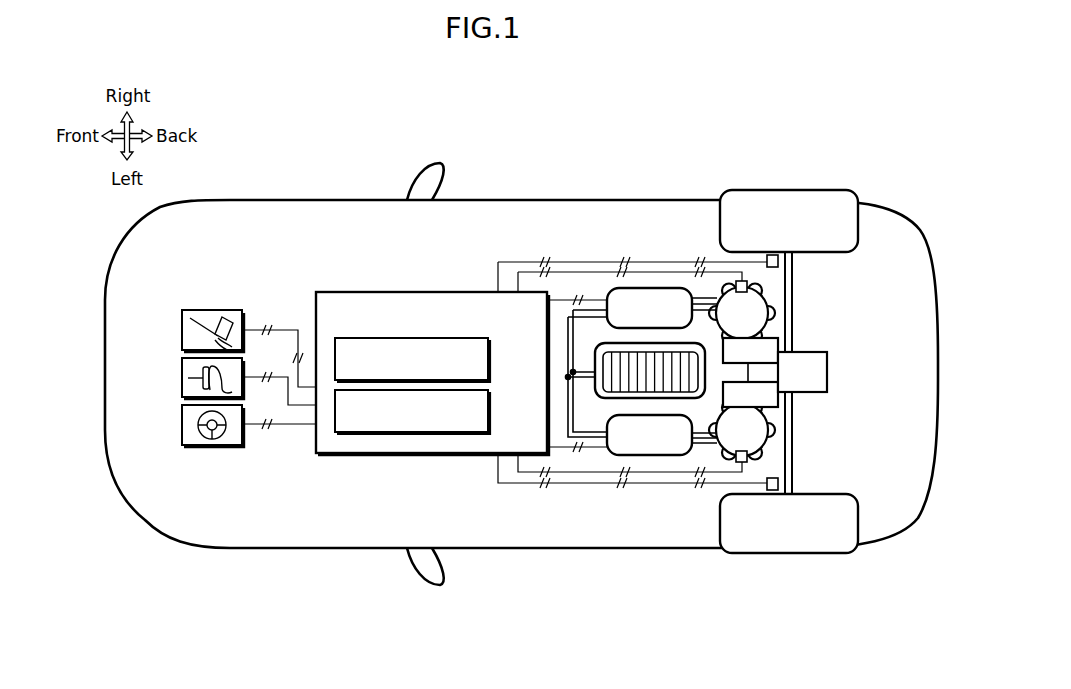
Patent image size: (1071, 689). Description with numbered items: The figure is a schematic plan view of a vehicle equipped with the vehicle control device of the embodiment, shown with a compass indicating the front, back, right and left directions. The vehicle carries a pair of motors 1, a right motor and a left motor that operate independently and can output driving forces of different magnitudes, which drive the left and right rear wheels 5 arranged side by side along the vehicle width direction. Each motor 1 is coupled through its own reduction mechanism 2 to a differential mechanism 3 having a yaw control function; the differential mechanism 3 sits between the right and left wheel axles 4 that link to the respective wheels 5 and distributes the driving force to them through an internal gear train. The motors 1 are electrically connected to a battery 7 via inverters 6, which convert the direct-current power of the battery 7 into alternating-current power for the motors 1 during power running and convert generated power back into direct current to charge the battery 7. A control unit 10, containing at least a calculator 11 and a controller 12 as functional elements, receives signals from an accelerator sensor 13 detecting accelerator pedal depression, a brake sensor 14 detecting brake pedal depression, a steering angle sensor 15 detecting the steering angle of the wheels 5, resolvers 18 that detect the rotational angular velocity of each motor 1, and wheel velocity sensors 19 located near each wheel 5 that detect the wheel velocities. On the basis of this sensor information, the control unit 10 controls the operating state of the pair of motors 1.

The motor 1 is at (770, 318).
The reduction mechanism 2 is at (778, 345).
The differential mechanism 3 is at (829, 372).
The wheel axle 4 is at (794, 266).
The wheel 5 is at (858, 222).
The inverter 6 is at (641, 288).
The battery 7 is at (605, 399).
The control unit 10 is at (432, 352).
The calculator 11 is at (490, 361).
The controller 12 is at (490, 412).
The accelerator sensor 13 is at (182, 331).
The brake sensor 14 is at (182, 378).
The steering angle sensor 15 is at (182, 425).
The resolver 18 is at (739, 281).
The wheel velocity sensor 19 is at (773, 255).